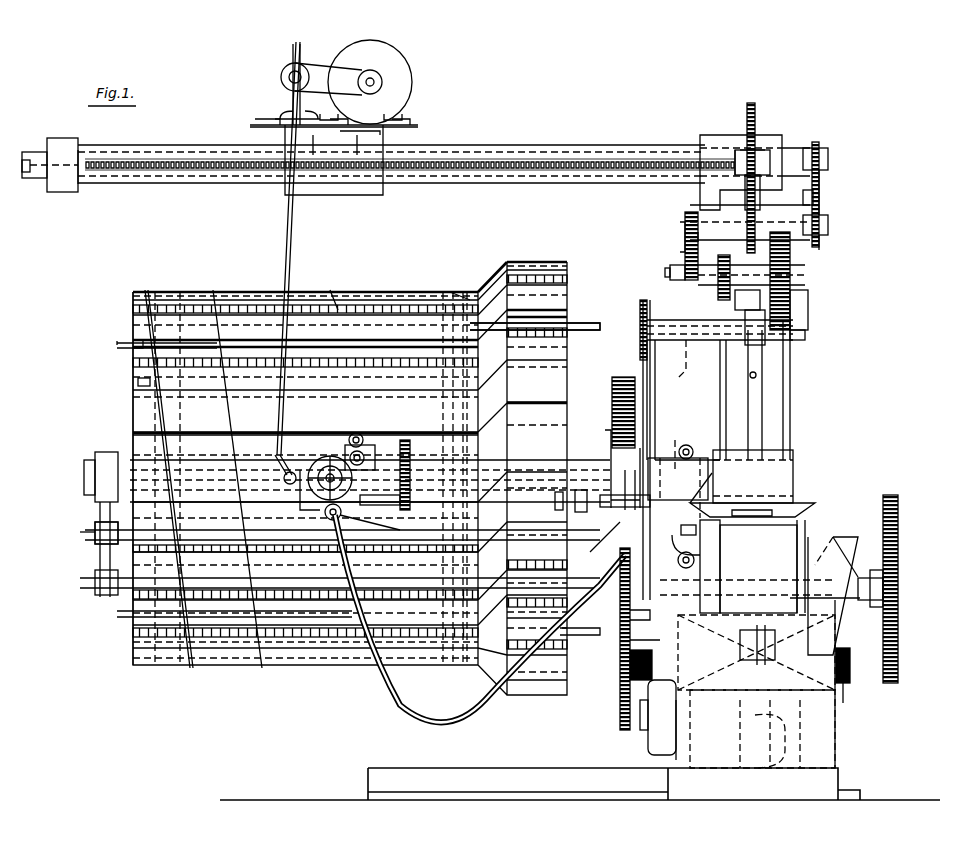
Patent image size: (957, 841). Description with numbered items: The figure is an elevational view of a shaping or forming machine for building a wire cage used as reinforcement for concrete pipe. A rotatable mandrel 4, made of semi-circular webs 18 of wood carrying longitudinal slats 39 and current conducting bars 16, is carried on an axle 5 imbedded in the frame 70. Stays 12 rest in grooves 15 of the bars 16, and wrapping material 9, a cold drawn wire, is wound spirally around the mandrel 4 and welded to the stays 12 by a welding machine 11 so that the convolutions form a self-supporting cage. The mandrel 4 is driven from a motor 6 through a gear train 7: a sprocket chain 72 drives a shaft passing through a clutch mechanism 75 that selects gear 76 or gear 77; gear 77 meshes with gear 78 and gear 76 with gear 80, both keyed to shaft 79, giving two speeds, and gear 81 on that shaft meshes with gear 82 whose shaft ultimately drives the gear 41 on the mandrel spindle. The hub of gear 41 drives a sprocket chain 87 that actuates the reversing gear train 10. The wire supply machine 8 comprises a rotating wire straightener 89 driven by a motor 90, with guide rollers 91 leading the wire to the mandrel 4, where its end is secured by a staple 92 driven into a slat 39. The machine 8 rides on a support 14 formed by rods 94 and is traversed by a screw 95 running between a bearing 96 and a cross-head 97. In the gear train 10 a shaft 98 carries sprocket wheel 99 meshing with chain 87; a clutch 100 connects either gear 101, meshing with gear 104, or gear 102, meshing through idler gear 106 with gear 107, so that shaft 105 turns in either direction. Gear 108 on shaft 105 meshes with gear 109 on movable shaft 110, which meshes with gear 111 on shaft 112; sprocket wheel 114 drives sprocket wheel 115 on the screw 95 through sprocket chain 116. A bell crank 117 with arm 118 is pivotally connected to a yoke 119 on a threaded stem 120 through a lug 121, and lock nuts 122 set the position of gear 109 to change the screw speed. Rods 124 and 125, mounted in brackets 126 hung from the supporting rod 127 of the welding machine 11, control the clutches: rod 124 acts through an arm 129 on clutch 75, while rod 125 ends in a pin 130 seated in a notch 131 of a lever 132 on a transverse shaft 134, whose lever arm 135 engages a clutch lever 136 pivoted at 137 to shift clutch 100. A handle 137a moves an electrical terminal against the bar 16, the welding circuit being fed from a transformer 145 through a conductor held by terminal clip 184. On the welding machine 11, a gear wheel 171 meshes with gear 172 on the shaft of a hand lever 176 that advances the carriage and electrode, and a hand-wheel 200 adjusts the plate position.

The mandrel 4 is at (388, 285).
The axle 5 is at (590, 430).
The motor 6 is at (660, 720).
The gear train 7 is at (842, 513).
The machine for supplying wrapping material 8 is at (413, 113).
The wrapping material 9 is at (290, 230).
The reversing gear train 10 is at (828, 218).
The welding machine 11 is at (375, 556).
The stays 12 is at (116, 343).
The support 14 is at (505, 185).
The grooves 15 is at (130, 350).
The current conducting bars 16 is at (581, 292).
The webs 18 is at (204, 276).
The slats 39 is at (256, 292).
The gear 41 is at (610, 380).
The frame 70 is at (800, 505).
The sprocket chain 72 is at (614, 670).
The clutch mechanism 75 is at (760, 665).
The gear 76 is at (615, 695).
The gear 77 is at (848, 690).
The gear 78 is at (845, 530).
The shaft 79 is at (900, 548).
The gear 80 is at (655, 494).
The gear 81 is at (898, 583).
The gear 82 is at (900, 512).
The sprocket chain 87 is at (652, 400).
The wire straightener 89 is at (288, 66).
The motor 90 is at (405, 76).
The guide rollers 91 is at (304, 50).
The staple 92 is at (138, 387).
The rods 94 is at (100, 190).
The screw 95 is at (540, 158).
The bearing 96 is at (700, 125).
The cross-head 97 is at (46, 140).
The shaft 98 is at (690, 372).
The sprocket wheel 99 is at (650, 312).
The clutch 100 is at (808, 312).
The gear 101 is at (805, 332).
The gear 102 is at (765, 345).
The gear 104 is at (795, 290).
The shaft 105 is at (805, 272).
The gear 106 is at (739, 298).
The gear 107 is at (735, 262).
The gear 108 is at (672, 260).
The gear 109 is at (675, 218).
The movable shaft 110 is at (790, 205).
The gear 111 is at (692, 200).
The shaft 112 is at (826, 178).
The sprocket wheel 114 is at (824, 245).
The sprocket wheel 115 is at (828, 155).
The sprocket chain 116 is at (830, 195).
The bell crank 117 is at (685, 236).
The arm 118 is at (805, 150).
The yoke 119 is at (730, 148).
The threaded stem 120 is at (755, 112).
The lug 121 is at (768, 130).
The lock nuts 122 is at (760, 135).
The rod 124 is at (82, 580).
The rod 125 is at (78, 530).
The brackets 126 is at (95, 502).
The supporting rod 127 is at (85, 462).
The arm 129 is at (628, 668).
The pin 130 is at (740, 490).
The notch 131 is at (700, 538).
The lever 132 is at (700, 552).
The shaft 134 is at (696, 562).
The lever arm 135 is at (692, 430).
The clutch lever 136 is at (763, 405).
The pivot 137 is at (756, 375).
The handle 137a is at (620, 550).
The transformer 145 is at (838, 730).
The gear wheel 171 is at (415, 455).
The gear 172 is at (405, 505).
The hand lever 176 is at (278, 440).
The terminal clip 184 is at (430, 725).
The hand-wheel 200 is at (352, 430).